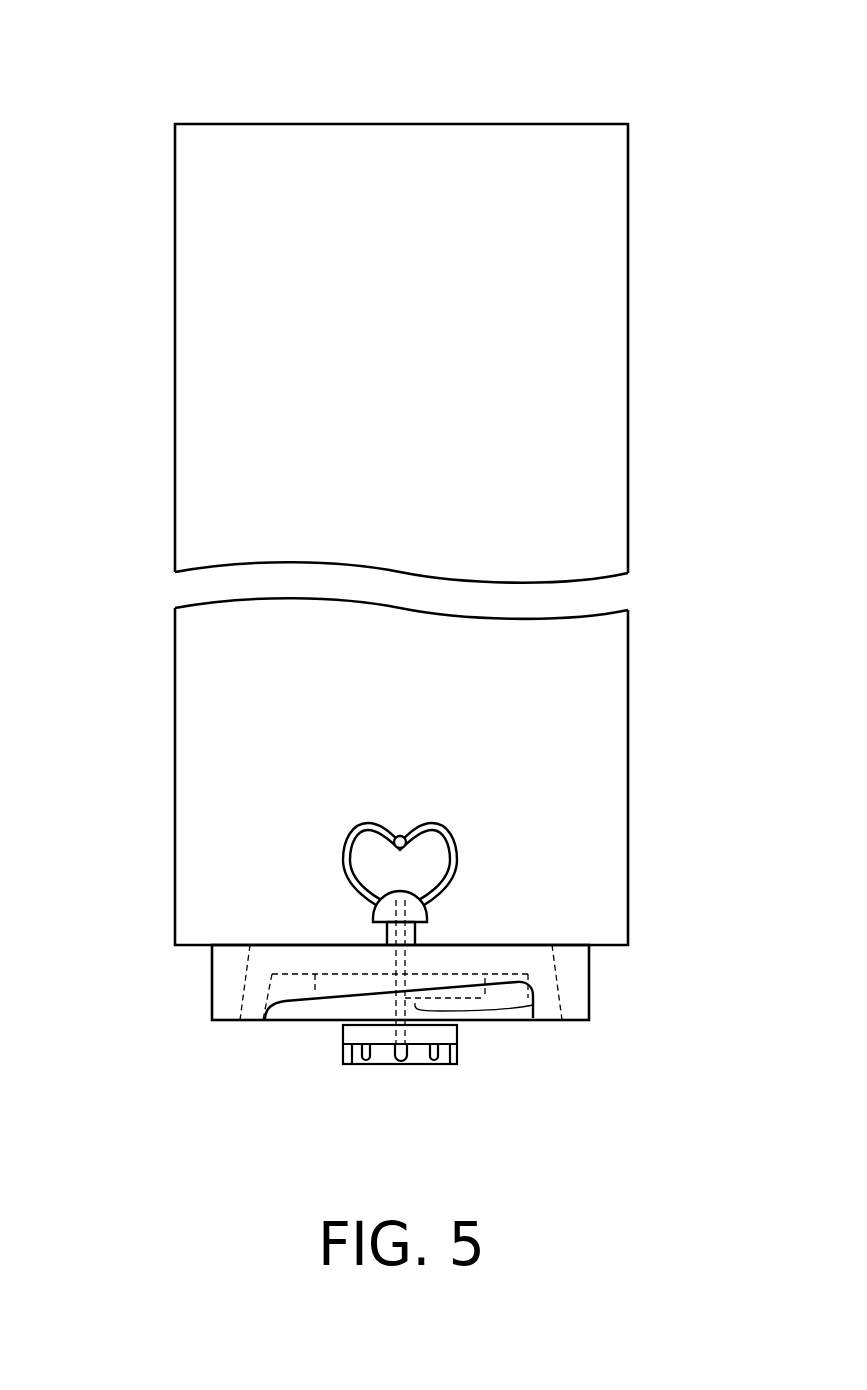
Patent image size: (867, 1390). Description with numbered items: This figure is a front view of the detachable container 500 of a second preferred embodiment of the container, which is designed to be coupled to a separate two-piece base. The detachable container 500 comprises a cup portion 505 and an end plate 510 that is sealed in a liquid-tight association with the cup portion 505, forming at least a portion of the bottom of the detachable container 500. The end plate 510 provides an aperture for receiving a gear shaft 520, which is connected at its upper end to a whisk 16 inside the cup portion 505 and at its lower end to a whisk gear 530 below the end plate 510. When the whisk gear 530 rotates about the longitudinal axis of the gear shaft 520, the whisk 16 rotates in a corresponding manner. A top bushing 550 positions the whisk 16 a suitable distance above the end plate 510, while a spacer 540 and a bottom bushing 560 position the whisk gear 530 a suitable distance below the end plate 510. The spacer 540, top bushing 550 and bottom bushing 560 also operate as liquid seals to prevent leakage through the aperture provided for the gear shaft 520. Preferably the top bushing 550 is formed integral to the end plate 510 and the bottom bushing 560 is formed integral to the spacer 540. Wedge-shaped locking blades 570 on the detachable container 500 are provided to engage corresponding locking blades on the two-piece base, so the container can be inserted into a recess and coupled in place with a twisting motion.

The detachable container 500 is at (327, 52).
The cup portion 505 is at (628, 738).
The whisk 16 is at (443, 832).
The top bushing 550 is at (385, 937).
The gear shaft 520 is at (420, 948).
The end plate 510 is at (288, 955).
The spacer 540 is at (315, 984).
The bottom bushing 560 is at (515, 1009).
The locking blade 570 is at (317, 1010).
The whisk gear 530 is at (458, 1035).